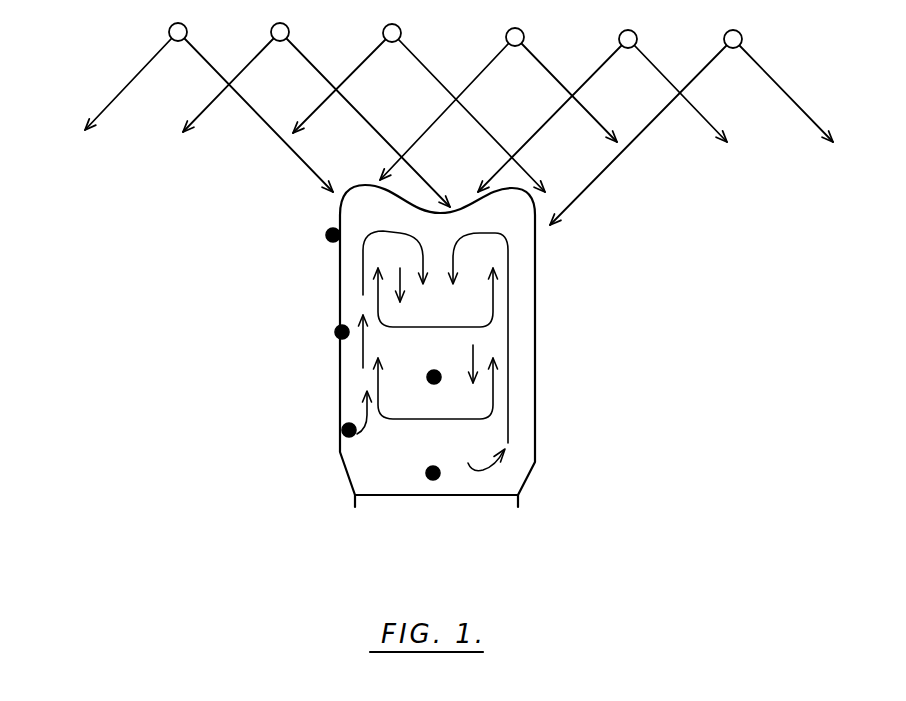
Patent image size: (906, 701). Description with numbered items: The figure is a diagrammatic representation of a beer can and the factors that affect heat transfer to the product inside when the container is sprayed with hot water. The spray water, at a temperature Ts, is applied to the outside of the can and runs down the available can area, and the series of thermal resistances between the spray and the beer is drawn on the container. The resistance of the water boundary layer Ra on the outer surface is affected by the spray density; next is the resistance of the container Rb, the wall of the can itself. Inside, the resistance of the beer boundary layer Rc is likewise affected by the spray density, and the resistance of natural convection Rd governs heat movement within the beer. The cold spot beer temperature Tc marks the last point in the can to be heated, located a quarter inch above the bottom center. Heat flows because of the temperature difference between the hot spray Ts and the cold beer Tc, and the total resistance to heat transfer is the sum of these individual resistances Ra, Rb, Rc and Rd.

The spray water temperature Ts is at (459, 124).
The water boundary layer resistance Ra is at (327, 235).
The container resistance Rb is at (336, 332).
The beer boundary layer resistance Rc is at (342, 432).
The natural convection resistance Rd is at (440, 366).
The cold spot beer temperature Tc is at (432, 481).